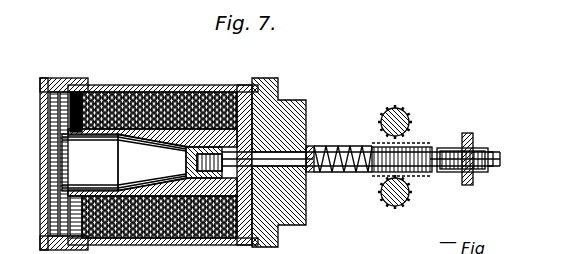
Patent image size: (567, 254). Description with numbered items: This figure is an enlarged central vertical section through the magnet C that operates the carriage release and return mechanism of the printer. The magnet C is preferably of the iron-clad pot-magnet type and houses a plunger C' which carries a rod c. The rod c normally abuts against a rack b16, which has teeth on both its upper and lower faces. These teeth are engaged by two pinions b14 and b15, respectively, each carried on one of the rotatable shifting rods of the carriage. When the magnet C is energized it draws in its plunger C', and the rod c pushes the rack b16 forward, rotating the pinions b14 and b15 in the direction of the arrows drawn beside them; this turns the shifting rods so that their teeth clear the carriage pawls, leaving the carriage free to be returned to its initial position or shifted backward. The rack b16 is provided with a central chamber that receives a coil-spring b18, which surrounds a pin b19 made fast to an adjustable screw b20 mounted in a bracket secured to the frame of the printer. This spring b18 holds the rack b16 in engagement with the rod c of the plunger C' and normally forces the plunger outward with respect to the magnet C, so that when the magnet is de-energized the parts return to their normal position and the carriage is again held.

The magnet C is at (173, 155).
The plunger C' is at (142, 162).
The rod c is at (306, 142).
The pinion b14 is at (402, 103).
The pinion b15 is at (430, 190).
The rack b16 is at (360, 150).
The coil-spring b18 is at (348, 172).
The pin b19 is at (428, 172).
The adjustable screw b20 is at (478, 150).